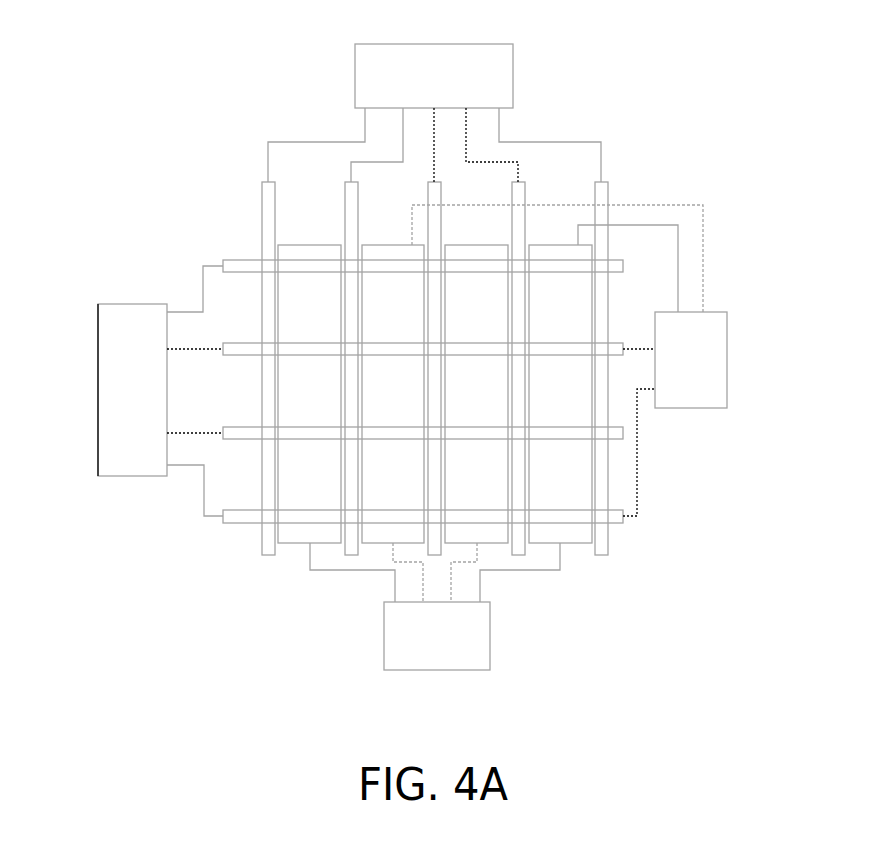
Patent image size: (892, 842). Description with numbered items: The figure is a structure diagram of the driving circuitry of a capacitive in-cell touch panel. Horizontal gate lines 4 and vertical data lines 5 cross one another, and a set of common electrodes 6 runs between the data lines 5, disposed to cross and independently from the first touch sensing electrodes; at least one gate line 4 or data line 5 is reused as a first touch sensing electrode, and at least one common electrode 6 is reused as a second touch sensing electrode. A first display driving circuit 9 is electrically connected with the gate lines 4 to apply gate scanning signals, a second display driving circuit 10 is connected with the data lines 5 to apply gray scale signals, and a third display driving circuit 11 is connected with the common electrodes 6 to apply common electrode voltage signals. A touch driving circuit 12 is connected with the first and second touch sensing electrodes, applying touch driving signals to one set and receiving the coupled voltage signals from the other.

The gate line 4 is at (252, 522).
The data line 5 is at (262, 198).
The common electrode 6 is at (298, 543).
The first display driving circuit 9 is at (118, 304).
The second display driving circuit 10 is at (539, 15).
The third display driving circuit 11 is at (490, 652).
The touch driving circuit 12 is at (678, 408).